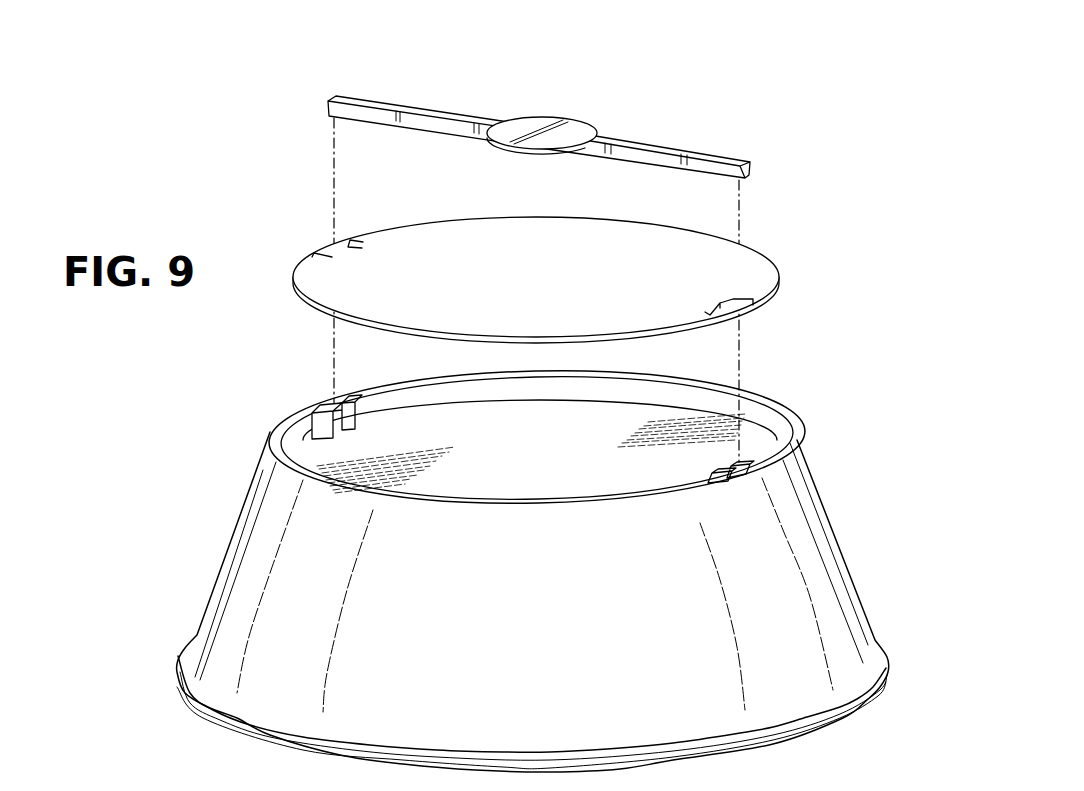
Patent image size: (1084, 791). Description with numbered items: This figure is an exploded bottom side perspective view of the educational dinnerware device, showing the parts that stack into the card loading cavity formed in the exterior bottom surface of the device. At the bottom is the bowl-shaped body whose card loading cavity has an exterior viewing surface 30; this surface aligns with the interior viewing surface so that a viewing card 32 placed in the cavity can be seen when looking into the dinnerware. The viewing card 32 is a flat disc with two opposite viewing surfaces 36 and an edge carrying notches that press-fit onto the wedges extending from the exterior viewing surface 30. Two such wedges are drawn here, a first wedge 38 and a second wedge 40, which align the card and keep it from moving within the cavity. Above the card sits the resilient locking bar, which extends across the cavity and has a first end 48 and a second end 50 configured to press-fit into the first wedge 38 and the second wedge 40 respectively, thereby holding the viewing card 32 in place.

The exterior viewing surface 30 is at (573, 420).
The viewing card 32 is at (604, 261).
The viewing surfaces 36 is at (590, 248).
The first wedge 38 is at (365, 434).
The second wedge 40 is at (707, 467).
The first end 48 is at (348, 104).
The second end 50 is at (732, 168).